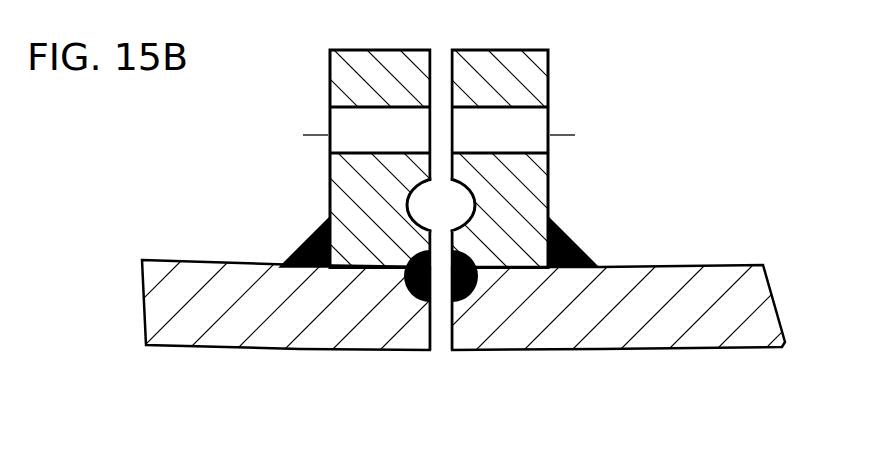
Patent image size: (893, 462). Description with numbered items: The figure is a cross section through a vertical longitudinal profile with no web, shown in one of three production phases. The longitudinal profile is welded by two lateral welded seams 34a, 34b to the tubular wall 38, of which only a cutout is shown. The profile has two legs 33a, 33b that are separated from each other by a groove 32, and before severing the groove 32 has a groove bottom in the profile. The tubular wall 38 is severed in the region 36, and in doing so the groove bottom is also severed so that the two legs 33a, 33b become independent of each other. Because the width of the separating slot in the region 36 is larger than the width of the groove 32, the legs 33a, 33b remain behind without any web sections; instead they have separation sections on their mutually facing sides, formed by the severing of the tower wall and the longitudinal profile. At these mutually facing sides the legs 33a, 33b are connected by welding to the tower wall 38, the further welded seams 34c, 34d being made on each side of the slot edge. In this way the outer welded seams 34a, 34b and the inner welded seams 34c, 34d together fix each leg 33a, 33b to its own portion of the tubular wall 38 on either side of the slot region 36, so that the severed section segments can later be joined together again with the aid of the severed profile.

The groove 32 is at (441, 65).
The leg 33a is at (520, 95).
The leg 33b is at (330, 97).
The welded seam 34a is at (563, 235).
The welded seam 34b is at (320, 236).
The welded seam 34c is at (473, 295).
The welded seam 34d is at (408, 290).
The separating slot region 36 is at (441, 345).
The tubular wall 38 is at (695, 303).